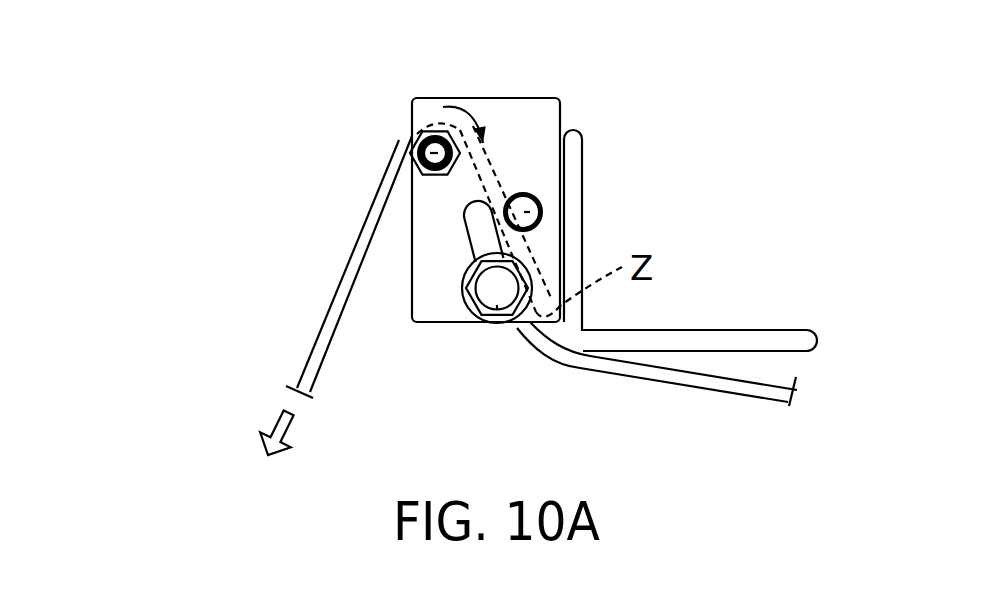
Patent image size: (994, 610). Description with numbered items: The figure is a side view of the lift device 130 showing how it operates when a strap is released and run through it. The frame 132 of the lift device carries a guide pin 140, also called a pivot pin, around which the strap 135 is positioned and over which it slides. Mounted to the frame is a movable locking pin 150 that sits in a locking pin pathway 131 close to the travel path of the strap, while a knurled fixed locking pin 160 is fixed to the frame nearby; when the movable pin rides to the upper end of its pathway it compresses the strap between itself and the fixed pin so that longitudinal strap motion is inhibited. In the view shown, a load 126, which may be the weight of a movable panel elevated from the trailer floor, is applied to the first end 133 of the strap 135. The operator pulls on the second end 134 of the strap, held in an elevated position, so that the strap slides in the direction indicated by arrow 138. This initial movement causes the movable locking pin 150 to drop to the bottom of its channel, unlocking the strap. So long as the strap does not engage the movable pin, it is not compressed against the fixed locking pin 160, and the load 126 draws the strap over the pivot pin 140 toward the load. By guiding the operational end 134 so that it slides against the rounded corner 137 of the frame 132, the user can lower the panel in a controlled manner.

The load 126 is at (258, 436).
The lift device 130 is at (600, 153).
The locking pin pathway 131 is at (483, 243).
The frame 132 is at (537, 107).
The first end of the strap 133 is at (313, 347).
The second end of the strap 134 is at (768, 390).
The strap 135 is at (342, 279).
The rounded corner 137 is at (600, 331).
The travel direction arrow 138 is at (445, 108).
The guide pin 140 is at (410, 140).
The movable locking pin 150 is at (488, 323).
The fixed locking pin 160 is at (533, 213).